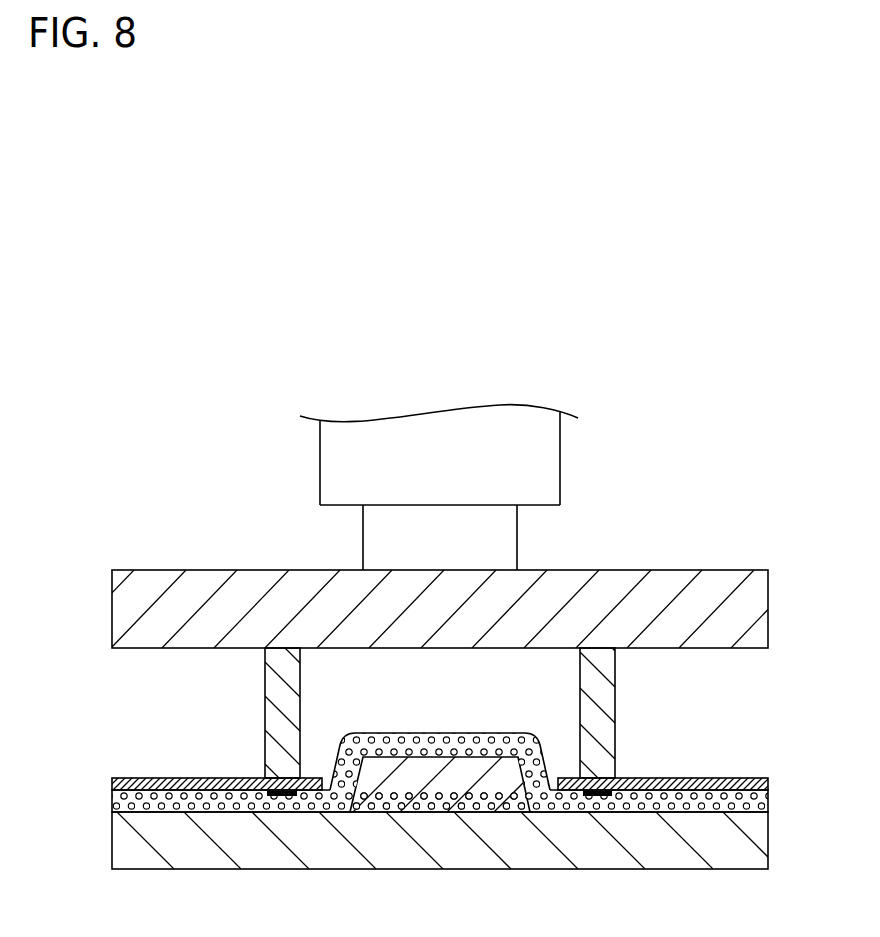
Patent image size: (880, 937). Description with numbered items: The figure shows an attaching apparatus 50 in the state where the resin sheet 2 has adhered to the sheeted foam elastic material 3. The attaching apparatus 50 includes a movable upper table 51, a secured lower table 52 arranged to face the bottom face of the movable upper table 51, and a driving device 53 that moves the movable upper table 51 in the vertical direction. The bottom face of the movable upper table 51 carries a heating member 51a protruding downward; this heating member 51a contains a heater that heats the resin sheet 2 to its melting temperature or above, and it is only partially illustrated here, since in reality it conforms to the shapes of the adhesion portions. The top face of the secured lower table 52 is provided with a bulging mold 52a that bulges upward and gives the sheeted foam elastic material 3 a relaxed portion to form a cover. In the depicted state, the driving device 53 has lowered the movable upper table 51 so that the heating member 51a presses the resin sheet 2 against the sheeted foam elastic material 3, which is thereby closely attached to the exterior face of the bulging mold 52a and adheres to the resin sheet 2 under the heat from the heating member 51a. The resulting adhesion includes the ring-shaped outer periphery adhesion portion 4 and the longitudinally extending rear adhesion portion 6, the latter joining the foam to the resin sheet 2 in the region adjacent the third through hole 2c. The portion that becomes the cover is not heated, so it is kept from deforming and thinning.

The resin sheet 2 is at (179, 778).
The third through hole 2c is at (549, 788).
The sheeted foam elastic material 3 is at (247, 795).
The outer periphery adhesion portion 4 is at (593, 796).
The rear adhesion portion 6 is at (282, 797).
The attaching apparatus 50 is at (667, 508).
The movable upper table 51 is at (132, 649).
The heating member 51a is at (265, 680).
The secured lower table 52 is at (140, 870).
The bulging mold 52a is at (545, 798).
The driving device 53 is at (320, 460).